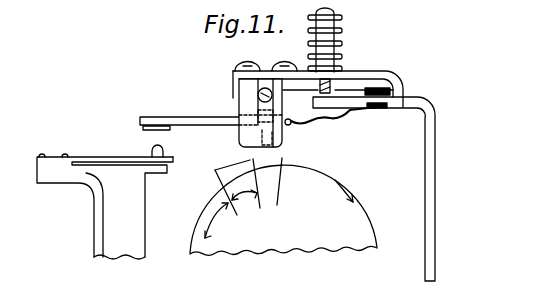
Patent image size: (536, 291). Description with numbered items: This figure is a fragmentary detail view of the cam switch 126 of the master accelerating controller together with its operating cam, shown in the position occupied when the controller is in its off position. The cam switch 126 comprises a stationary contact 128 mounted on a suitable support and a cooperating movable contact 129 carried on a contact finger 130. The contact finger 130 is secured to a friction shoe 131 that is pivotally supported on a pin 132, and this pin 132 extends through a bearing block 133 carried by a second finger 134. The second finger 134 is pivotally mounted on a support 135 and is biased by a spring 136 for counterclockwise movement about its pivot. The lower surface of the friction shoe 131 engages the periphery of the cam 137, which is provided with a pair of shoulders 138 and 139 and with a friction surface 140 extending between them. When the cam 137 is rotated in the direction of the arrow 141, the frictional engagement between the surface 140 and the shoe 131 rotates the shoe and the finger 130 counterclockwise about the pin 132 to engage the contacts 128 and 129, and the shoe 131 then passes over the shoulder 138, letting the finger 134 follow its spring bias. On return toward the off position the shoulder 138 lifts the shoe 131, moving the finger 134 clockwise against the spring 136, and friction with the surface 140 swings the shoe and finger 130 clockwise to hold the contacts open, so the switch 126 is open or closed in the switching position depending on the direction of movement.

The cam switch 126 is at (170, 93).
The stationary contact 128 is at (152, 152).
The movable contact 129 is at (142, 129).
The contact finger 130 is at (203, 116).
The friction shoe 131 is at (247, 146).
The pin 132 is at (268, 97).
The bearing block 133 is at (237, 95).
The second finger 134 is at (363, 78).
The support 135 is at (430, 126).
The spring 136 is at (342, 33).
The cam 137 is at (360, 226).
The shoulder 138 is at (214, 182).
The shoulder 139 is at (284, 150).
The friction surface 140 is at (230, 160).
The arrow 141 is at (353, 188).